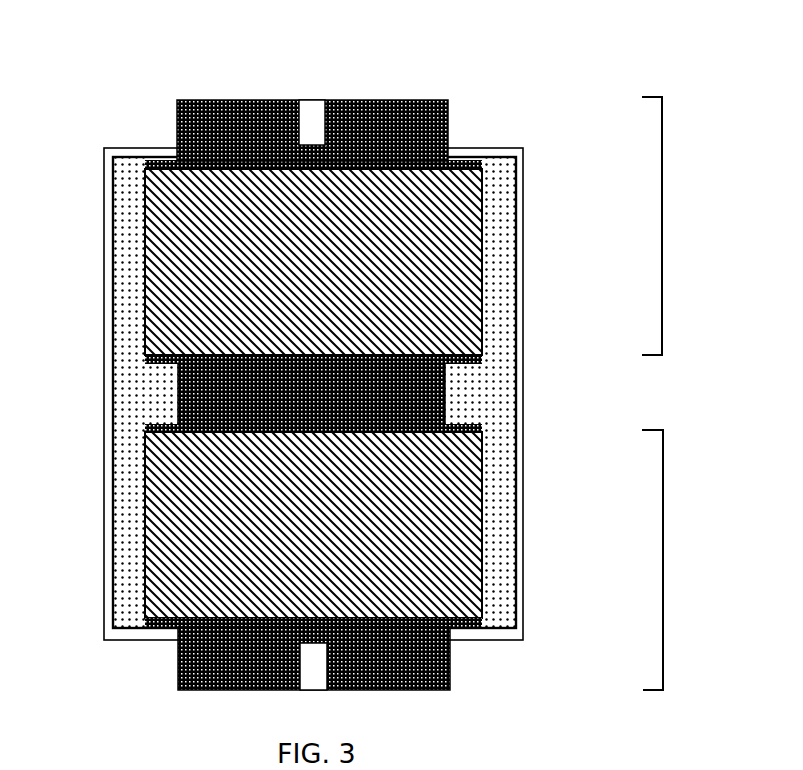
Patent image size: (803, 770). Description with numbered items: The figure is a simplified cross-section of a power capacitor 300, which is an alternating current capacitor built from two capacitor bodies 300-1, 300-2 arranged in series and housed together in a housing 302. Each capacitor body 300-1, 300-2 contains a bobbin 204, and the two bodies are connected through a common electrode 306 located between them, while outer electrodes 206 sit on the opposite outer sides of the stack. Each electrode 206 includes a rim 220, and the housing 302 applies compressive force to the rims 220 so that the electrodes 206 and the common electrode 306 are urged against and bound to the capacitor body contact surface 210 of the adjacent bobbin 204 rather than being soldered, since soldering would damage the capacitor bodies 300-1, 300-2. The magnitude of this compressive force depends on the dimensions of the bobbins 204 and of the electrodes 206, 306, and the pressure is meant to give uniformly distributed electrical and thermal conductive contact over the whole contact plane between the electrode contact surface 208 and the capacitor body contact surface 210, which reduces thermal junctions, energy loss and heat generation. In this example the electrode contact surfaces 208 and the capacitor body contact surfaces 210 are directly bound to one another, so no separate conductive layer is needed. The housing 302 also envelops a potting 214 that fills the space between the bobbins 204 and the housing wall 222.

The power capacitor 300 is at (322, 391).
The capacitor body 300-1 is at (665, 252).
The capacitor body 300-2 is at (665, 556).
The housing 302 is at (146, 168).
The common electrode 306 is at (195, 378).
The bobbin 204 is at (437, 258).
The electrode 206 is at (402, 99).
The electrode contact surface 208 is at (146, 170).
The capacitor body contact surface 210 is at (483, 162).
The potting 214 is at (498, 253).
The rim 220 is at (165, 163).
The housing wall 222 is at (110, 545).